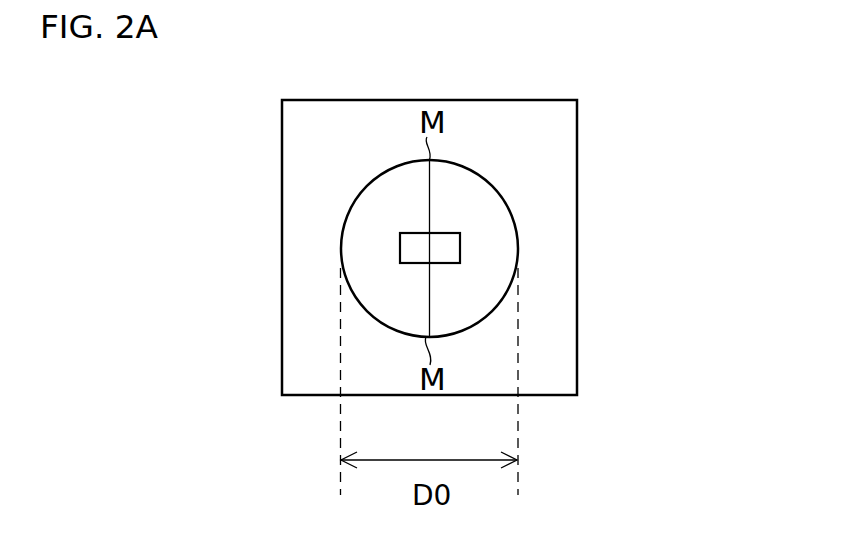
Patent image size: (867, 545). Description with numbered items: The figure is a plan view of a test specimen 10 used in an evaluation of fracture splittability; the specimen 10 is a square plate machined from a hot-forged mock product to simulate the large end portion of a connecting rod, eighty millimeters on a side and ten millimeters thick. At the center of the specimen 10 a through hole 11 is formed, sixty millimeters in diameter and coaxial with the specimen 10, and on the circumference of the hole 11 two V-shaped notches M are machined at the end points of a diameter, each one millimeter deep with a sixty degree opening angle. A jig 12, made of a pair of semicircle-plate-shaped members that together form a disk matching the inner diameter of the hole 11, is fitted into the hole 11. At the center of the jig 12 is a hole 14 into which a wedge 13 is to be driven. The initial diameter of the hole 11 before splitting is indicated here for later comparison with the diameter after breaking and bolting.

The specimen 10 is at (548, 132).
The hole 11 is at (518, 213).
The jig 12 is at (462, 310).
The wedge 13 is at (410, 245).
The hole 14 is at (455, 260).